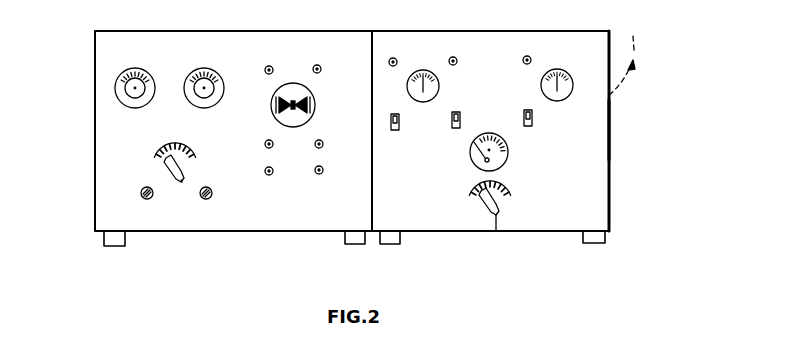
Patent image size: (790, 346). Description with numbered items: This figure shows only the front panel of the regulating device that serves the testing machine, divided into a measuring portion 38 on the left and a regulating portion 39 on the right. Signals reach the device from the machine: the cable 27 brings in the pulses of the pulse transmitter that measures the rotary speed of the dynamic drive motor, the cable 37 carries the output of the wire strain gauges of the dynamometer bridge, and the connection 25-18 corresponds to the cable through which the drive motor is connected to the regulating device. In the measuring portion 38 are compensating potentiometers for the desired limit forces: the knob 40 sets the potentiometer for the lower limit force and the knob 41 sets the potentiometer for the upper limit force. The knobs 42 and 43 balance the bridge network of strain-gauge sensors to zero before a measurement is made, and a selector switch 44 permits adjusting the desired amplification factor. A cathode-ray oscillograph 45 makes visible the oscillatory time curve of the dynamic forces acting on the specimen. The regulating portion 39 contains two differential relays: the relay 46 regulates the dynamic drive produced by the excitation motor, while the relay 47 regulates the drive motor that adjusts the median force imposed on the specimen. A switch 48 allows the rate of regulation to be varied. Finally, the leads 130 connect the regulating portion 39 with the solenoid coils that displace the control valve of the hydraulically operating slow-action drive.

The cable 27 is at (93, 70).
The cable 37 is at (93, 152).
The measuring portion 38 is at (172, 222).
The regulating portion 39 is at (553, 212).
The knob 40 is at (115, 88).
The knob 41 is at (196, 70).
The knob 42 is at (150, 200).
The knob 43 is at (212, 192).
The selector switch 44 is at (182, 182).
The cathode-ray oscillograph 45 is at (306, 118).
The differential relay 46 is at (425, 98).
The differential relay 47 is at (560, 97).
The switch 48 is at (496, 230).
The leads 130 is at (630, 28).
The console cabinet 25-18 is at (625, 117).